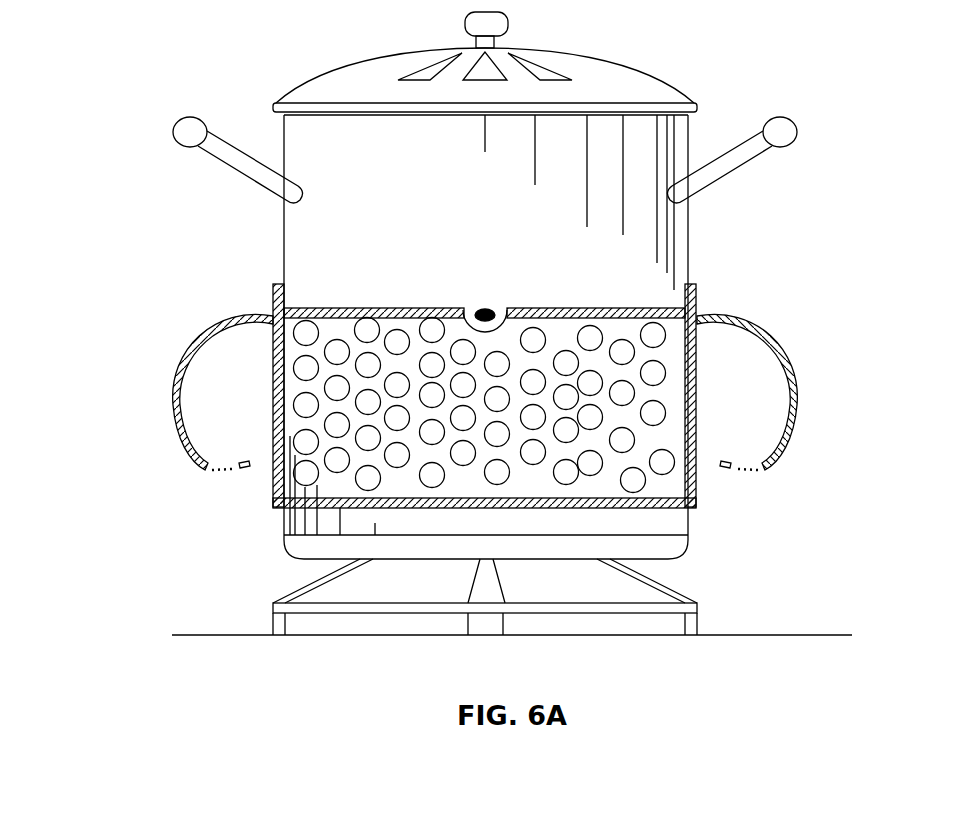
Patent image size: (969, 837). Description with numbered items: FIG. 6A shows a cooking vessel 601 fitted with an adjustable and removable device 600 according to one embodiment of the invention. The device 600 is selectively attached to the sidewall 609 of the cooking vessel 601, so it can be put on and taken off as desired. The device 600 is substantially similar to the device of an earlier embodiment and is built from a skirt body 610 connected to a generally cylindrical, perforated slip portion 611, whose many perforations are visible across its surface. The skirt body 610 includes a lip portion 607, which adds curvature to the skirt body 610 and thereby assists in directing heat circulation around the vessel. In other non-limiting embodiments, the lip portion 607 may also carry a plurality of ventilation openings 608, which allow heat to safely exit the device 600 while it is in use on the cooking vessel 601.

The adjustable and removable device 600 is at (226, 279).
The cooking vessel 601 is at (270, 74).
The lip portion 607 is at (172, 435).
The ventilation openings 608 is at (235, 482).
The sidewall 609 is at (580, 240).
The skirt body 610 is at (172, 372).
The slip portion 611 is at (648, 450).